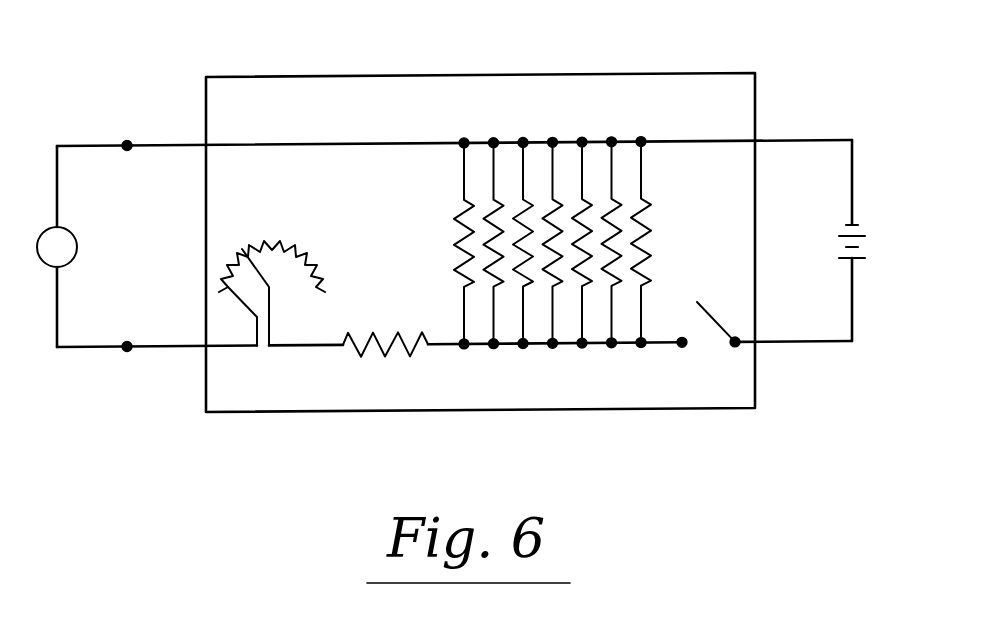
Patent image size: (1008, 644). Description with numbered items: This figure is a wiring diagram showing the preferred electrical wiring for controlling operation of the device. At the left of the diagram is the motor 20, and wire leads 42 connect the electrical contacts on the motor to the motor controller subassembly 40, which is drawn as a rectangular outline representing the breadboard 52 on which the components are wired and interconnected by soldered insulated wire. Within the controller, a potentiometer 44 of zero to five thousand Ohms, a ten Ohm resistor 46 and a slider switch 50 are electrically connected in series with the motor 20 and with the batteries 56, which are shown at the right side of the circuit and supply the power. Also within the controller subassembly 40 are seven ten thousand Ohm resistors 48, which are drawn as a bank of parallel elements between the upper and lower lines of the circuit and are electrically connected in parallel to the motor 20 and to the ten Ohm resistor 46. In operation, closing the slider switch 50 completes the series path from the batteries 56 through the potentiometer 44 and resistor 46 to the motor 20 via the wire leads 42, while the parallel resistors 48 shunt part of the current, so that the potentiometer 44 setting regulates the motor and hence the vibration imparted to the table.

The motor 20 is at (78, 247).
The motor controller subassembly 40 is at (723, 40).
The wire leads 42 is at (162, 144).
The potentiometer 44 is at (270, 238).
The resistor 46 is at (386, 354).
The resistors 48 is at (457, 271).
The slider switch 50 is at (732, 346).
The breadboard 52 is at (357, 412).
The batteries 56 is at (870, 248).